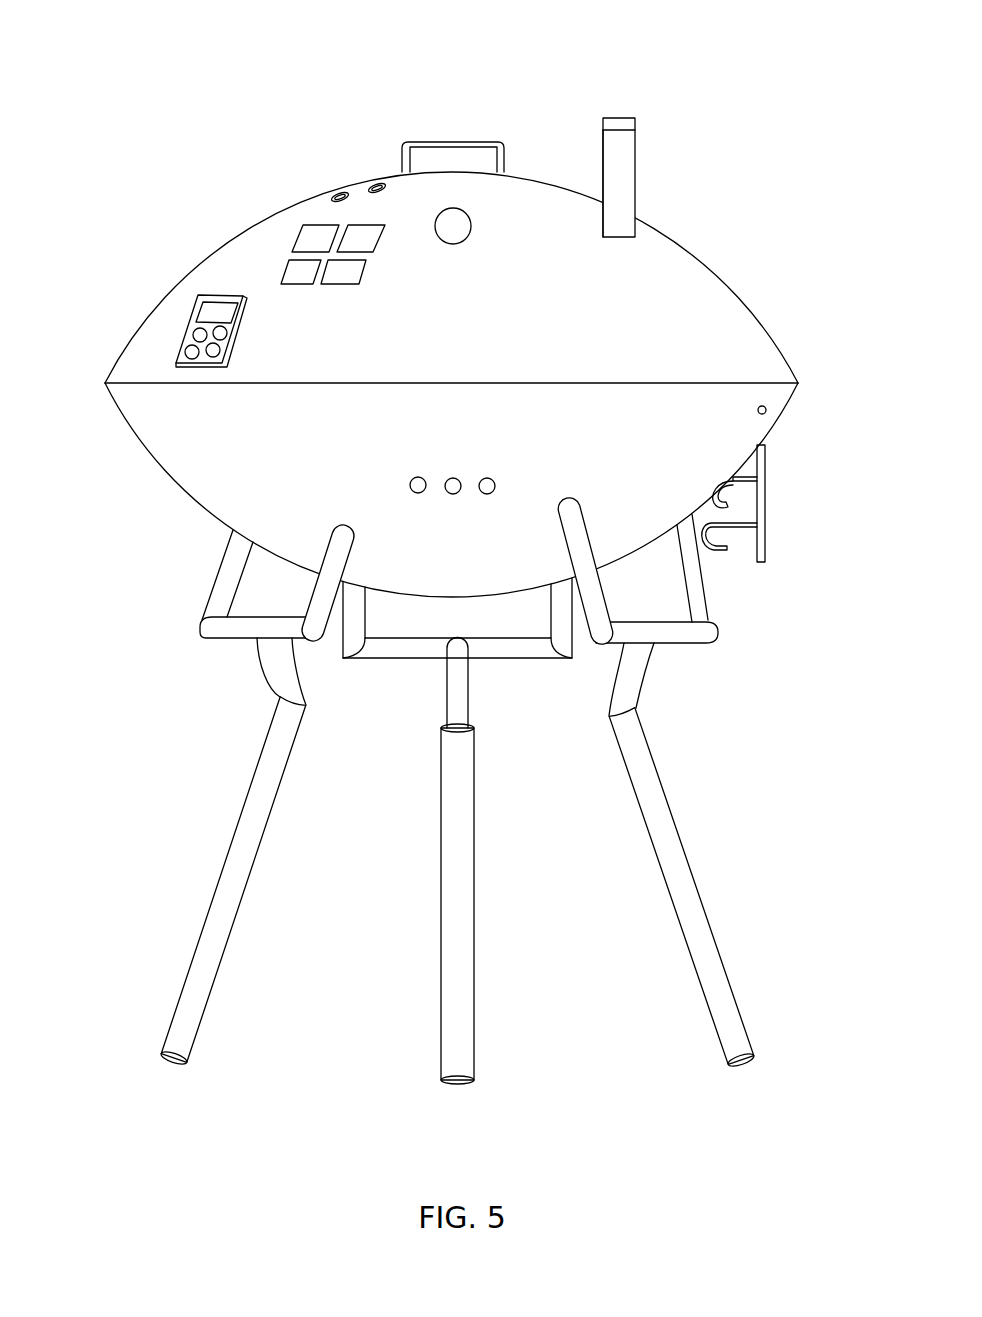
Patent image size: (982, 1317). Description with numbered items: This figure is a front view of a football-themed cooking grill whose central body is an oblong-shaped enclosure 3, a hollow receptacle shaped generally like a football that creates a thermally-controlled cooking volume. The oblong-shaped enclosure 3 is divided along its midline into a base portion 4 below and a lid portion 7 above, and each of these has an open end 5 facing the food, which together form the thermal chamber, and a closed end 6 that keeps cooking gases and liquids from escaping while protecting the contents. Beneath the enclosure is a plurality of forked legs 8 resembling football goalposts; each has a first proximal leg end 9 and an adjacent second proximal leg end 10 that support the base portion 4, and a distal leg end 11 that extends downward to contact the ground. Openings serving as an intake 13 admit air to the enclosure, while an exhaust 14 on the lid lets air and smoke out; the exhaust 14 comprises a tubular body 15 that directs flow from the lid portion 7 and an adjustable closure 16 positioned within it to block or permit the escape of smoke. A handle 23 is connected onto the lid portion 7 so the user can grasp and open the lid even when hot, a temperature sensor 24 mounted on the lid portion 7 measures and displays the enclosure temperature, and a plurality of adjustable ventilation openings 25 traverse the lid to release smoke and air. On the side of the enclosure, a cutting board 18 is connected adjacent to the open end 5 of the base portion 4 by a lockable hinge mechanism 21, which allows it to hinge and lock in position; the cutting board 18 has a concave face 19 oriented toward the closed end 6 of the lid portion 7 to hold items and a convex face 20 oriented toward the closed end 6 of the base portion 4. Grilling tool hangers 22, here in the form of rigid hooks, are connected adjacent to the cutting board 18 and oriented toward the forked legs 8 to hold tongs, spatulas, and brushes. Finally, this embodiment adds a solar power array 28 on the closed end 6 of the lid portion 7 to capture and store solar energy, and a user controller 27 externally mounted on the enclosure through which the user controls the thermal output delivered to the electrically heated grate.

The oblong-shaped enclosure 3 is at (210, 60).
The base portion 4 is at (208, 490).
The open end 5 is at (118, 330).
The closed end 6 is at (400, 298).
The lid portion 7 is at (207, 273).
The forked legs 8 is at (460, 791).
The first proximal leg end 9 is at (340, 557).
The second proximal leg end 10 is at (200, 575).
The distal leg end 11 is at (180, 930).
The intake 13 is at (410, 482).
The exhaust 14 is at (683, 119).
The tubular body 15 is at (626, 184).
The adjustable closure 16 is at (624, 126).
The cutting board 18 is at (747, 515).
The concave face 19 is at (767, 497).
The convex face 20 is at (706, 510).
The lockable hinge mechanism 21 is at (767, 410).
The grilling tool hanger 22 is at (742, 477).
The handle 23 is at (425, 150).
The temperature sensor 24 is at (453, 227).
The adjustable ventilation openings 25 is at (341, 194).
The user controller 27 is at (203, 362).
The solar power array 28 is at (260, 257).